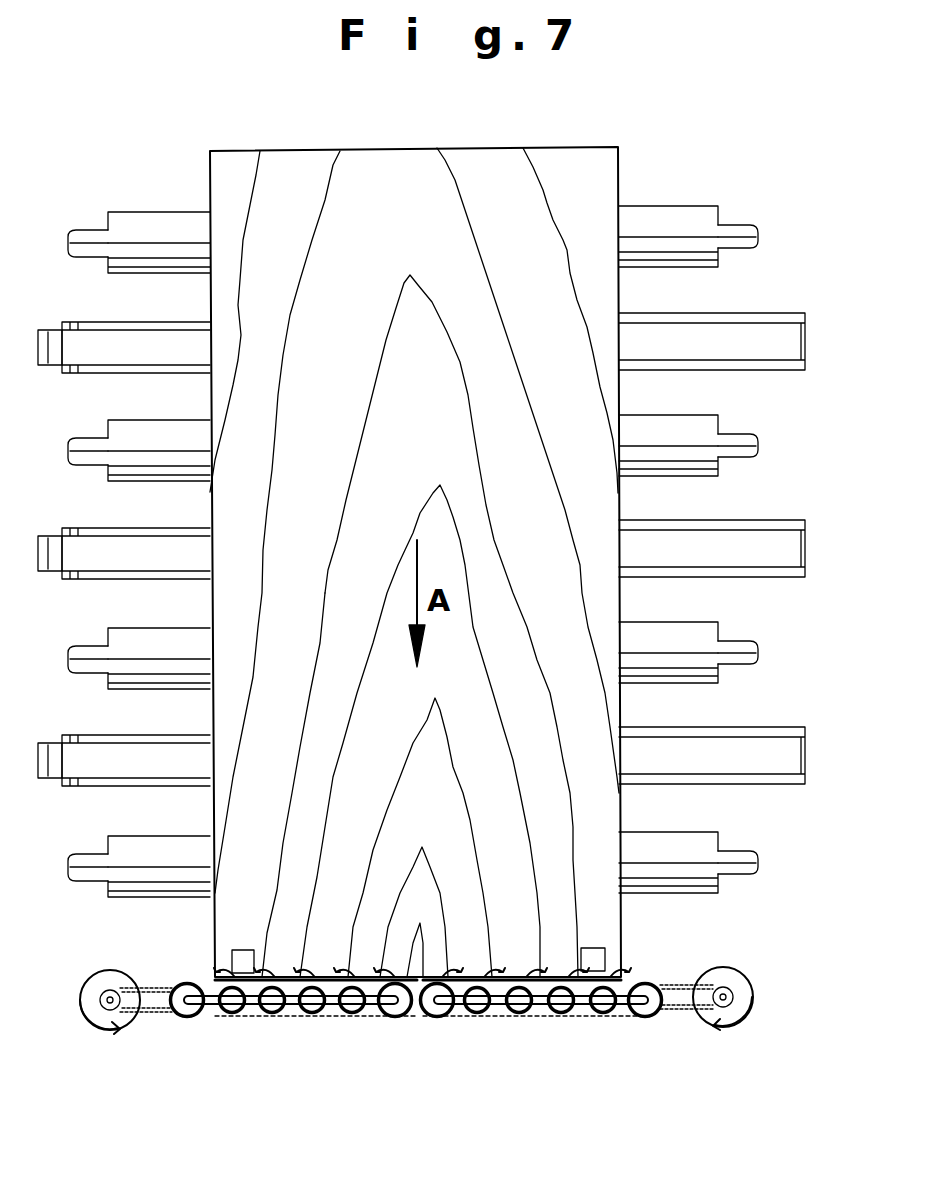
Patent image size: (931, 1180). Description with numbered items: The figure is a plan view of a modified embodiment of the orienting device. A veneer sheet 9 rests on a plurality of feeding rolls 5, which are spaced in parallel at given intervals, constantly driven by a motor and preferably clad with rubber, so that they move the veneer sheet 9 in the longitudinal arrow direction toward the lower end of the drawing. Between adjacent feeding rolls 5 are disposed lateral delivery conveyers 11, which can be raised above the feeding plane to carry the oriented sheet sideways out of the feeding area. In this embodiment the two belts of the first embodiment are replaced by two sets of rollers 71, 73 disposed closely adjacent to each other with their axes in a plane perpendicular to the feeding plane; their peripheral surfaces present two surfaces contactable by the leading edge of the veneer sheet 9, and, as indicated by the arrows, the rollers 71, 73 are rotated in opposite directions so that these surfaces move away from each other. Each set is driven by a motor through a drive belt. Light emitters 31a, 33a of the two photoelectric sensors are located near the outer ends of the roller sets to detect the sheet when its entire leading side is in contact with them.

The veneer sheet 9 is at (568, 158).
The feeding roll 5 is at (158, 260).
The lateral delivery conveyer 11 is at (127, 357).
The light emitter 31a is at (243, 957).
The light emitter 33a is at (588, 950).
The set of rollers 71 is at (392, 1013).
The set of rollers 73 is at (512, 1014).